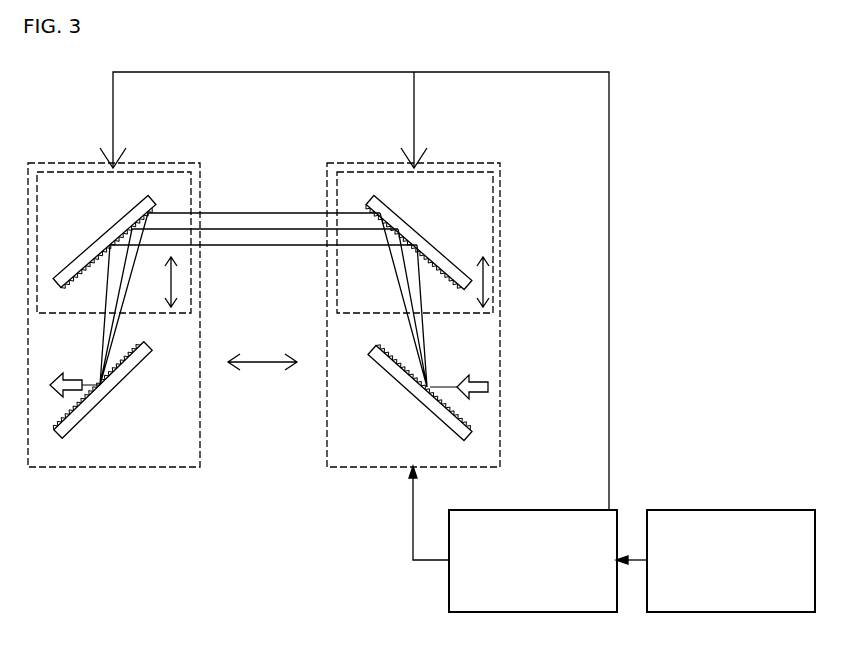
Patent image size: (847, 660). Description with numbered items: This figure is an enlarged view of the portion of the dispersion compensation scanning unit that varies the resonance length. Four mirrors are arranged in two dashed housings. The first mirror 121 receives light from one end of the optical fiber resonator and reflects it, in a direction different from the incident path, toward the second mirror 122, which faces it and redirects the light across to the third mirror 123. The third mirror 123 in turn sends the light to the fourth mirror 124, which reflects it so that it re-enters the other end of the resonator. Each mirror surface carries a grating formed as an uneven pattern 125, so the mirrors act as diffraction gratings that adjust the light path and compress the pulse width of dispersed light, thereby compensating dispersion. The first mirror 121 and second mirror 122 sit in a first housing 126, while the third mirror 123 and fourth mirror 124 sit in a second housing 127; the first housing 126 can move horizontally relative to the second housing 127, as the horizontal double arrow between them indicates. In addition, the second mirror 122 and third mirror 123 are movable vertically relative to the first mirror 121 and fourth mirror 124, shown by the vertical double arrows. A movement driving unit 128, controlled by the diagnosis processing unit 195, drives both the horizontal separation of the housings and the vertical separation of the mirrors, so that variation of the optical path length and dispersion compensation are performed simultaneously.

The first mirror 121 is at (417, 400).
The second mirror 122 is at (417, 230).
The third mirror 123 is at (102, 240).
The fourth mirror 124 is at (120, 385).
The uneven pattern 125 is at (402, 360).
The first housing 126 is at (499, 315).
The second housing 127 is at (113, 468).
The movement driving unit 128 is at (554, 510).
The diagnosis processing unit 195 is at (680, 510).